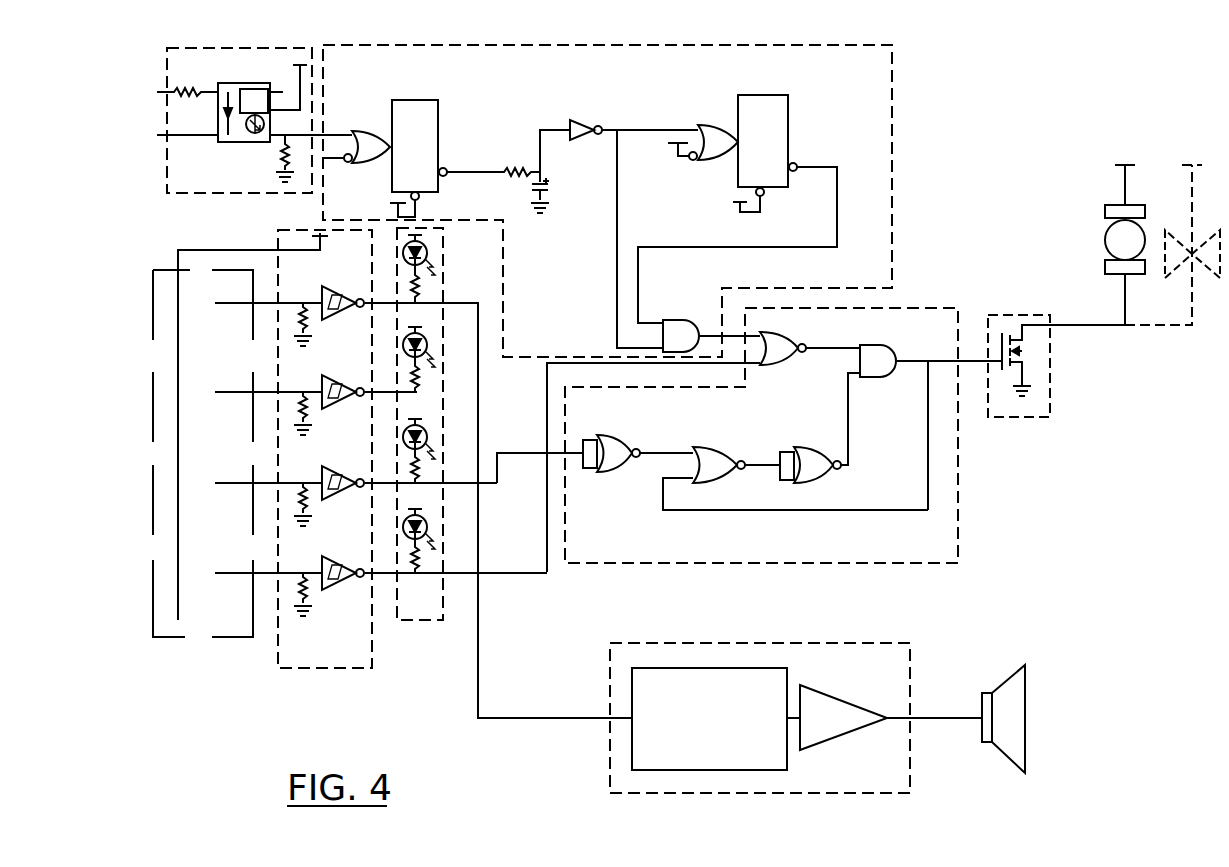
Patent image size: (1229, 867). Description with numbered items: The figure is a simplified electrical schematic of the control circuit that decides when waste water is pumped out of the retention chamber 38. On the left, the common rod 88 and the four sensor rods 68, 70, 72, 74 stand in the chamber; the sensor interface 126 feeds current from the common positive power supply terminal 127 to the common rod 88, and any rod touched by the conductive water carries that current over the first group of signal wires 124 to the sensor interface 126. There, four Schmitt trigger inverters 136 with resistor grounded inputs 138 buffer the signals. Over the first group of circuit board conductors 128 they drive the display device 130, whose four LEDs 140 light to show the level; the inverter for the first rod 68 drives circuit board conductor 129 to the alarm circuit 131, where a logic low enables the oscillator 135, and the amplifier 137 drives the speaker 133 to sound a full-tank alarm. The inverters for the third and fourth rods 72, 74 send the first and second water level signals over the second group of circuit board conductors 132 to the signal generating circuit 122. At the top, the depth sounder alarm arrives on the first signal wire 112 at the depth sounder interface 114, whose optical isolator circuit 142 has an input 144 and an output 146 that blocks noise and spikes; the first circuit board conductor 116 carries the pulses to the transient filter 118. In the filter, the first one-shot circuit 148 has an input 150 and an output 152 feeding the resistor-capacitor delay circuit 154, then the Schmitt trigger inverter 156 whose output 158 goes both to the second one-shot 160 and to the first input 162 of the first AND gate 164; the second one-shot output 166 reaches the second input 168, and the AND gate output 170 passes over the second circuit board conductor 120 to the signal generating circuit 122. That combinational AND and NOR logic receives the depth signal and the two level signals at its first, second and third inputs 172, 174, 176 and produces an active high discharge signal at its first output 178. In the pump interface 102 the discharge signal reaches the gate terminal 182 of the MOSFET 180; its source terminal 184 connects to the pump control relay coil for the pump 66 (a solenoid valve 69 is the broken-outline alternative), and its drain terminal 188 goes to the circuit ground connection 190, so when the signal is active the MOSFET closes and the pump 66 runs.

The retention chamber 38 is at (165, 632).
The pump 66 is at (1105, 240).
The first sensor rod 68 is at (245, 301).
The solenoid valve 69 is at (1172, 240).
The second sensor rod 70 is at (250, 390).
The third sensor rod 72 is at (250, 481).
The fourth sensor rod 74 is at (250, 571).
The common rod 88 is at (178, 455).
The pump interface 102 is at (1052, 418).
The first signal wire 112 is at (160, 92).
The depth sounder interface 114 is at (165, 160).
The first circuit board conductor 116 is at (323, 130).
The transient filter 118 is at (895, 95).
The second circuit board conductor 120 is at (745, 325).
The signal generating circuit 122 is at (862, 563).
The first group of signal wires 124 is at (267, 622).
The sensor interface 126 is at (330, 670).
The common positive power supply terminal 127 is at (320, 235).
The first group of circuit board conductors 128 is at (386, 602).
The circuit board conductor 129 is at (480, 730).
The display device 130 is at (436, 622).
The alarm circuit 131 is at (915, 648).
The second group of circuit board conductors 132 is at (532, 590).
The speaker 133 is at (1028, 686).
The oscillator 135 is at (690, 668).
The Schmitt trigger inverters 136 is at (335, 308).
The amplifier 137 is at (822, 686).
The resistor grounded inputs 138 is at (304, 303).
The LEDs 140 is at (438, 254).
The optical isolator circuit 142 is at (240, 95).
The optical isolator input 144 is at (196, 90).
The optical isolator output 146 is at (278, 140).
The first one-shot circuit 148 is at (420, 100).
The one-shot input 150 is at (340, 140).
The one-shot output 152 is at (450, 170).
The resistor-capacitor delay circuit 154 is at (548, 190).
The Schmitt trigger inverter 156 is at (585, 126).
The inverter output 158 is at (635, 128).
The second one-shot 160 is at (770, 95).
The first input of first AND gate 162 is at (655, 348).
The first AND gate 164 is at (680, 320).
The second one-shot output 166 is at (797, 165).
The second input of first AND gate 168 is at (650, 323).
The first AND gate output 170 is at (720, 335).
The first input 172 is at (766, 340).
The second input 174 is at (732, 368).
The third input 176 is at (573, 456).
The first output 178 is at (928, 355).
The MOSFET 180 is at (1024, 351).
The gate terminal 182 is at (1000, 368).
The source terminal 184 is at (1010, 333).
The drain terminal 188 is at (1024, 372).
The circuit ground connection 190 is at (1030, 388).